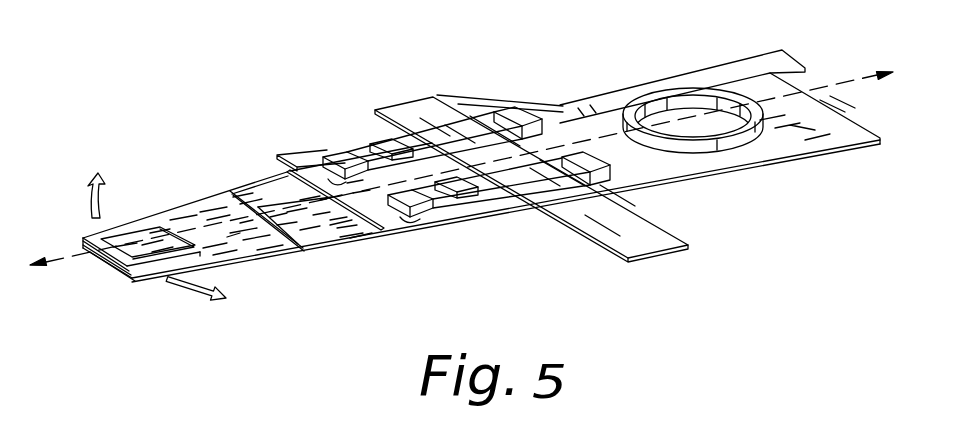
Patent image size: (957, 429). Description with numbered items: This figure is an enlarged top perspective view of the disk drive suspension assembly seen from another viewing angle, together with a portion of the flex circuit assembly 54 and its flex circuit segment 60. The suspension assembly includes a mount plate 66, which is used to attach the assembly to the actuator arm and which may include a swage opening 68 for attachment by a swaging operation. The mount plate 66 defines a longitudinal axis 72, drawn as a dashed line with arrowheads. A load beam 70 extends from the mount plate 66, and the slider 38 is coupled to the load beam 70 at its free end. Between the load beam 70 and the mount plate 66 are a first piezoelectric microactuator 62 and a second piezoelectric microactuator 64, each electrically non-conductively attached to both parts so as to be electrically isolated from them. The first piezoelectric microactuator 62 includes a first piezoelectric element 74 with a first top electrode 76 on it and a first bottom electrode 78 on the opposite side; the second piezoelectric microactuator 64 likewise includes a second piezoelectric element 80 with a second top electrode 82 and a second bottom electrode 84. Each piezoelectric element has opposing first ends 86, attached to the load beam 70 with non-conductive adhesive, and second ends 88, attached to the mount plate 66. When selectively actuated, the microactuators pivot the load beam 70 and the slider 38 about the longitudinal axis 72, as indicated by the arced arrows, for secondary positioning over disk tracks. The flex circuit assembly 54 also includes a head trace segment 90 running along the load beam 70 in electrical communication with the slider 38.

The slider 38 is at (129, 275).
The flex circuit assembly 54 is at (600, 100).
The flex circuit segment 60 is at (594, 227).
The first piezoelectric microactuator 62 is at (465, 117).
The second piezoelectric microactuator 64 is at (489, 232).
The mount plate 66 is at (838, 120).
The swage opening 68 is at (676, 95).
The load beam 70 is at (219, 200).
The longitudinal axis 72 is at (60, 259).
The first piezoelectric element 74 is at (327, 157).
The first top electrode 76 is at (400, 143).
The first bottom electrode 78 is at (342, 165).
The second piezoelectric element 80 is at (423, 208).
The second top electrode 82 is at (473, 184).
The second bottom electrode 84 is at (470, 213).
The first ends 86 is at (295, 172).
The second ends 88 is at (544, 124).
The head trace segment 90 is at (285, 220).